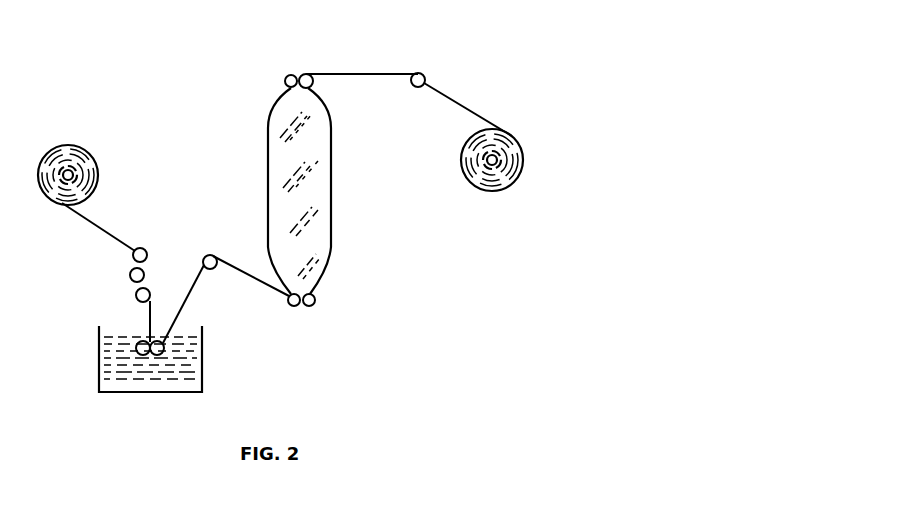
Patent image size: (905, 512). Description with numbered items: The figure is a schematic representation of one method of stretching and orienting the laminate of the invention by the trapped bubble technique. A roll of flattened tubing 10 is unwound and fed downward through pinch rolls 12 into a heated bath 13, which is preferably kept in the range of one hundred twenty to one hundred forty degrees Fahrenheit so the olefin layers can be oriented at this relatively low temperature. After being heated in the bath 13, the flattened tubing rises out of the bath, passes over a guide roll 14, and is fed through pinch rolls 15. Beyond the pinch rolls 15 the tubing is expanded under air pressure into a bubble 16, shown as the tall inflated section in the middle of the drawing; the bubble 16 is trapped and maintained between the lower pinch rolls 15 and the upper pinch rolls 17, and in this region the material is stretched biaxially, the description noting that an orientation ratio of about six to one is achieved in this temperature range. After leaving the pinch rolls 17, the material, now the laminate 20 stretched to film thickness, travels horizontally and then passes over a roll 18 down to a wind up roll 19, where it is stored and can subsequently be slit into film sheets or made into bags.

The roll of flattened tubing 10 is at (78, 146).
The pinch rolls 12 is at (138, 338).
The heated bath 13 is at (99, 348).
The guide roll 14 is at (208, 270).
The pinch rolls 15 is at (312, 307).
The bubble 16 is at (333, 204).
The pinch rolls 17 is at (293, 73).
The roll 18 is at (423, 73).
The wind up roll 19 is at (520, 144).
The laminate 20 is at (363, 72).